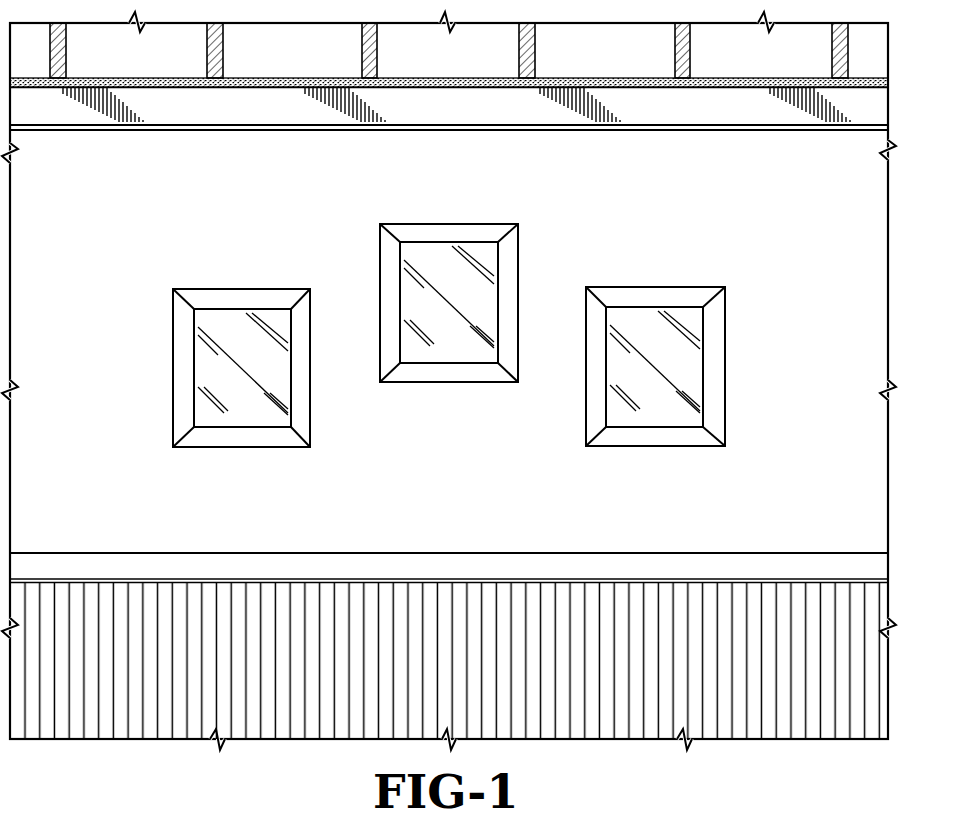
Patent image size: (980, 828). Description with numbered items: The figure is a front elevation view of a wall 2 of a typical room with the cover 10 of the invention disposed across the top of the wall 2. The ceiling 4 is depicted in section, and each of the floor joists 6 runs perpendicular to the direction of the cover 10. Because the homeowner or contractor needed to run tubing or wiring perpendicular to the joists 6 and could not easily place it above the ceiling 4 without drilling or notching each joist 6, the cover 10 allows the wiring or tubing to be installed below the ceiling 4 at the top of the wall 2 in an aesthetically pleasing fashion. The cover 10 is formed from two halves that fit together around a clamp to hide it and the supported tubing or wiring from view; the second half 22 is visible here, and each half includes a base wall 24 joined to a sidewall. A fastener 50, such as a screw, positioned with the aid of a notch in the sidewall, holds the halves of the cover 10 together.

The wall 2 is at (856, 223).
The ceiling 4 is at (864, 86).
The floor joist 6 is at (66, 52).
The cover 10 is at (719, 136).
The second half 22 is at (187, 124).
The base wall 24 is at (440, 110).
The fastener 50 is at (58, 132).